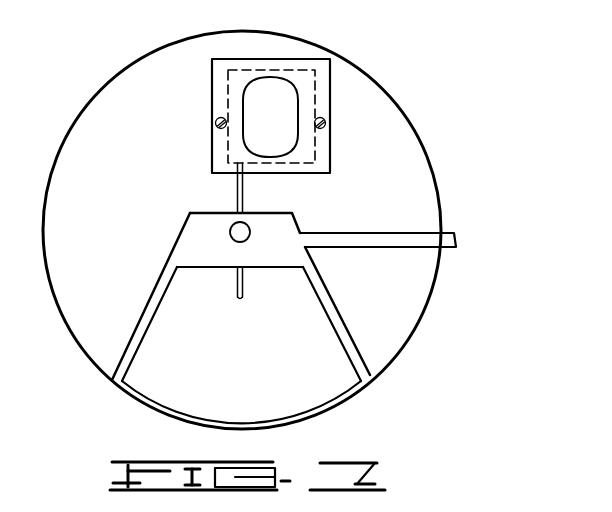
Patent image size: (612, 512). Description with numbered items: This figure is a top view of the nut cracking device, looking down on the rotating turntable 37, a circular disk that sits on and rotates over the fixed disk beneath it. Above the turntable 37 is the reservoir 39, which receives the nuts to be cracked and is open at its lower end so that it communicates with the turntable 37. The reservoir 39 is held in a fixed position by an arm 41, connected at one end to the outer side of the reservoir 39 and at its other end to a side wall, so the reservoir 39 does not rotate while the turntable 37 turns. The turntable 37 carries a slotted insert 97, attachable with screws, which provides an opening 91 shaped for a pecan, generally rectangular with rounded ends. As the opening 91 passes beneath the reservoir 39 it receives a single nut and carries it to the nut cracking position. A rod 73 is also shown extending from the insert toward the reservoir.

The turntable 37 is at (398, 167).
The reservoir 39 is at (336, 322).
The arm 41 is at (443, 239).
The rod 73 is at (240, 205).
The opening 91 is at (283, 113).
The slotted insert 97 is at (323, 108).